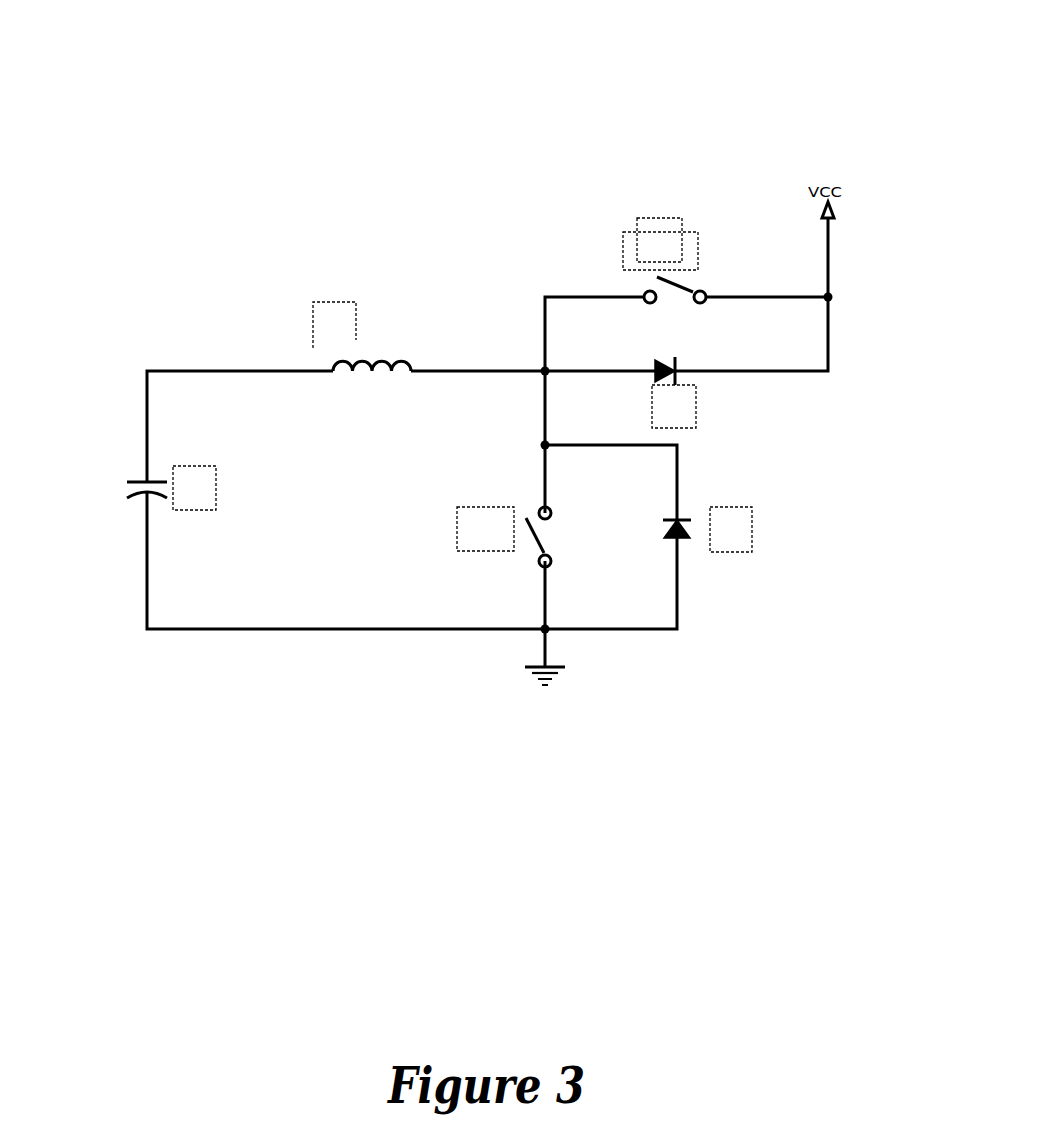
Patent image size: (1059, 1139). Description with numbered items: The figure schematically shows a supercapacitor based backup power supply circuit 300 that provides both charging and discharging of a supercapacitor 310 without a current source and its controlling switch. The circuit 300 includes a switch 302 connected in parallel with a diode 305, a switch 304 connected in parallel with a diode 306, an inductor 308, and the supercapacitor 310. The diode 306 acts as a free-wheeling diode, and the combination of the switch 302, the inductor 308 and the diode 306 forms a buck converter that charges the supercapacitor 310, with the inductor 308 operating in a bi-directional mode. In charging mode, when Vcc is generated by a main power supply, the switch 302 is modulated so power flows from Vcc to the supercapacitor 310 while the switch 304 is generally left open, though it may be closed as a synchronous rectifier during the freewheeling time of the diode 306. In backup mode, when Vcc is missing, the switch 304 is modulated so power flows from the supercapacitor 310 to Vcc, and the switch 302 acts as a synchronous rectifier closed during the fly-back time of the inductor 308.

The backup power supply circuit 300 is at (652, 107).
The switch 302 is at (695, 270).
The switch 304 is at (512, 507).
The diode 305 is at (682, 356).
The diode 306 is at (678, 538).
The inductor 308 is at (371, 357).
The supercapacitor 310 is at (135, 472).